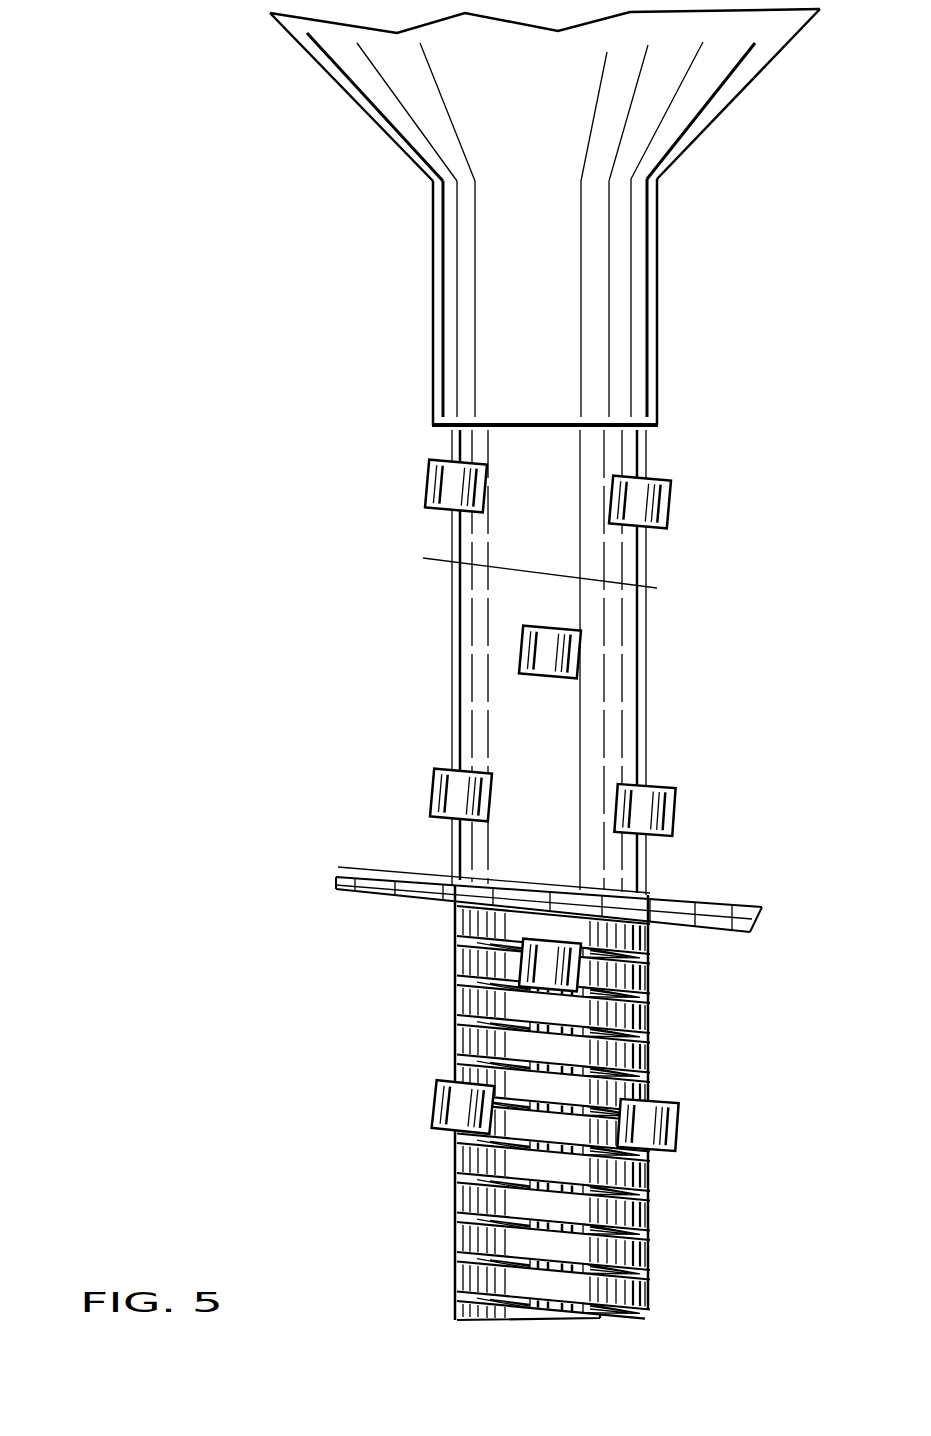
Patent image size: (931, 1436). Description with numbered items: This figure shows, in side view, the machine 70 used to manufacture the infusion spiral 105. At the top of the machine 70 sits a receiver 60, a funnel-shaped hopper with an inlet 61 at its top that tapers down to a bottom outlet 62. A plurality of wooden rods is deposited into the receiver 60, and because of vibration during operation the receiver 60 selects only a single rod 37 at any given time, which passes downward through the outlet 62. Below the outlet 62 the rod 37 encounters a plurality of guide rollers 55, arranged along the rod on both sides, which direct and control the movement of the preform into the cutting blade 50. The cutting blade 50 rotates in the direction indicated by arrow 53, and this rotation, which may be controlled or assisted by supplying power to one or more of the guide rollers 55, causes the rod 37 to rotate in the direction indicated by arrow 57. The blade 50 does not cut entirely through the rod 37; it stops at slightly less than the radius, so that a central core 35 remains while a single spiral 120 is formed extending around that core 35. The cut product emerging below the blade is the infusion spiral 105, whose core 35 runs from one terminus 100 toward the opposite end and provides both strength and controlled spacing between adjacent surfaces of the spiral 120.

The machine 70 is at (218, 173).
The receiver 60 is at (662, 223).
The inlet 61 is at (529, 92).
The bottom outlet 62 is at (540, 388).
The guide rollers 55 is at (427, 483).
The arrow 57 is at (658, 566).
The arrow 53 is at (366, 847).
The cutting blade 50 is at (336, 885).
The rod 37 is at (635, 865).
The infusion spiral 105 is at (700, 1010).
The spiral 120 is at (652, 1253).
The core 35 is at (477, 1222).
The terminus 100 is at (475, 1322).